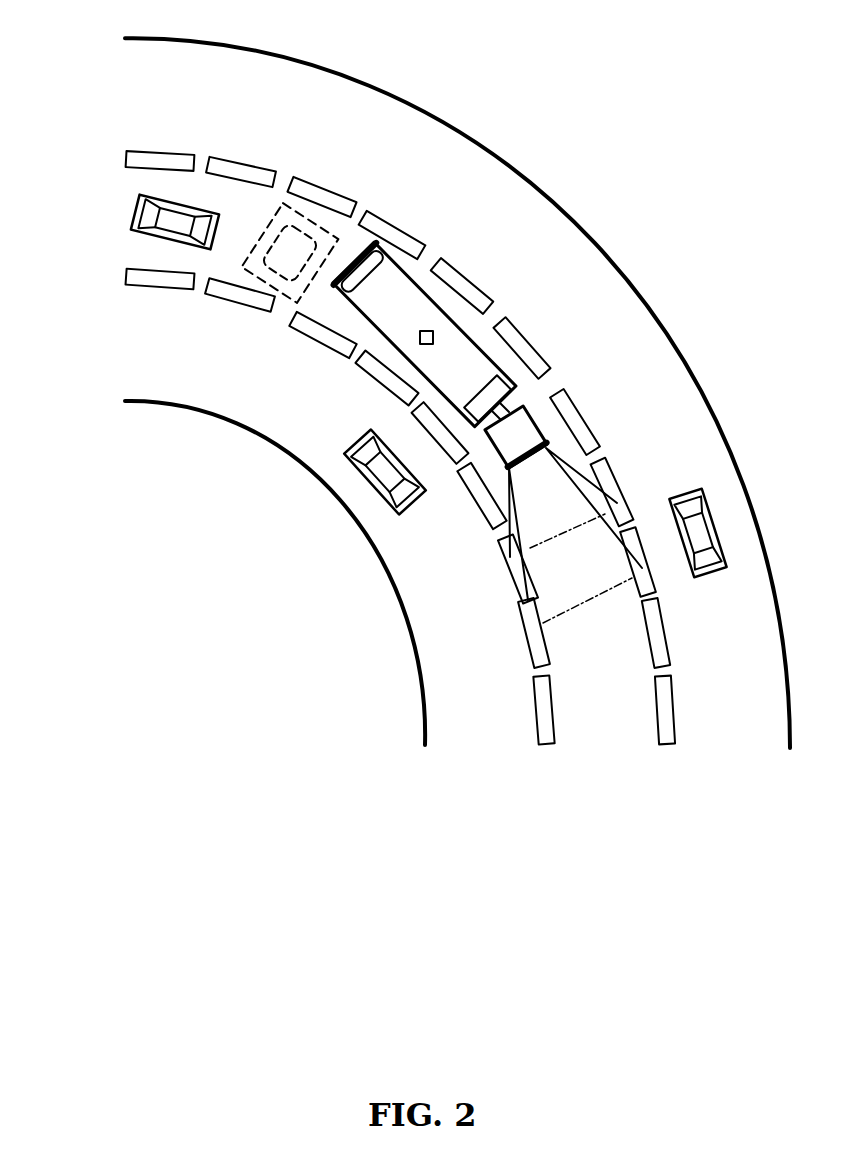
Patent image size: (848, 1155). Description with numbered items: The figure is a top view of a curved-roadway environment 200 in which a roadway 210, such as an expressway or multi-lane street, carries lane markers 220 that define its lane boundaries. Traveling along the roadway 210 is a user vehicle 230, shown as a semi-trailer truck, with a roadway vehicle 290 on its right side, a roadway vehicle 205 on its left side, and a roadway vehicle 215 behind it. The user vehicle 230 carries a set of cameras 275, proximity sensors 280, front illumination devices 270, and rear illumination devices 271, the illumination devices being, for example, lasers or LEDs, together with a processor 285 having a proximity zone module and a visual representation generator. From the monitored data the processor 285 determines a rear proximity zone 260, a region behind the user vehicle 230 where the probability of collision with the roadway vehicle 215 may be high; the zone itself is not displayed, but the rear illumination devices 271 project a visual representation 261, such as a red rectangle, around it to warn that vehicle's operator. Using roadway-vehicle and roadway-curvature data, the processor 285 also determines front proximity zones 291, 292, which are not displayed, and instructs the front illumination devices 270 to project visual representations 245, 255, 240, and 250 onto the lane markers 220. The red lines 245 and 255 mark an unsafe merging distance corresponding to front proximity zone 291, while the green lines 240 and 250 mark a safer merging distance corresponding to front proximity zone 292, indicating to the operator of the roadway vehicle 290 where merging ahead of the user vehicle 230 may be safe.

The curved-roadway environment 200 is at (630, 60).
The roadway vehicle 205 is at (715, 515).
The roadway 210 is at (673, 347).
The roadway vehicle 215 is at (133, 213).
The lane markers 220 is at (533, 643).
The user vehicle 230 is at (461, 282).
The visual representation 240 is at (528, 605).
The visual representation 245 is at (507, 528).
The visual representation 250 is at (627, 503).
The visual representation 255 is at (593, 467).
The rear proximity zone 260 is at (222, 252).
The visual representation 261 is at (258, 283).
The front illumination devices 270 is at (550, 430).
The rear illumination devices 271 is at (350, 243).
The cameras 275 is at (505, 370).
The proximity sensors 280 is at (378, 262).
The processor 285 is at (422, 332).
The roadway vehicle 290 is at (358, 440).
The front proximity zone 291 is at (552, 538).
The front proximity zone 292 is at (572, 613).